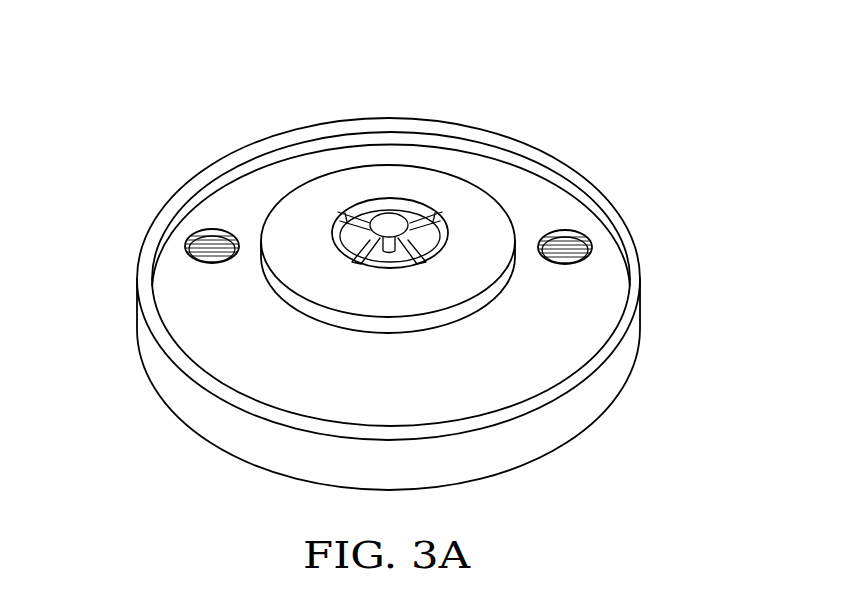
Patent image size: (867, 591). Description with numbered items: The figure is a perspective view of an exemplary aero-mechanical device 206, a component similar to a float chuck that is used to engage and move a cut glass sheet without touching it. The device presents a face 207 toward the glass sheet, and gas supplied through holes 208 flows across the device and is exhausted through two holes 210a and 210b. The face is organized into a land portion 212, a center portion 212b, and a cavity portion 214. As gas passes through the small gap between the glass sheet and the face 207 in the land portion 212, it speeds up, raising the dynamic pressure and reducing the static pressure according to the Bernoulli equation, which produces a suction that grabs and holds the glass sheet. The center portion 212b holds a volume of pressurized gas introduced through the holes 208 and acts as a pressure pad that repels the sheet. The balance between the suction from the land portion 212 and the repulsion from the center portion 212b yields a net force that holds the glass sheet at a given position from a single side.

The aero-mechanical device 206 is at (682, 40).
The face 207 is at (318, 257).
The holes 208 is at (360, 238).
The hole 210a is at (190, 264).
The hole 210b is at (592, 245).
The land portion 212 is at (325, 217).
The center portion 212b is at (445, 215).
The cavity portion 214 is at (170, 232).